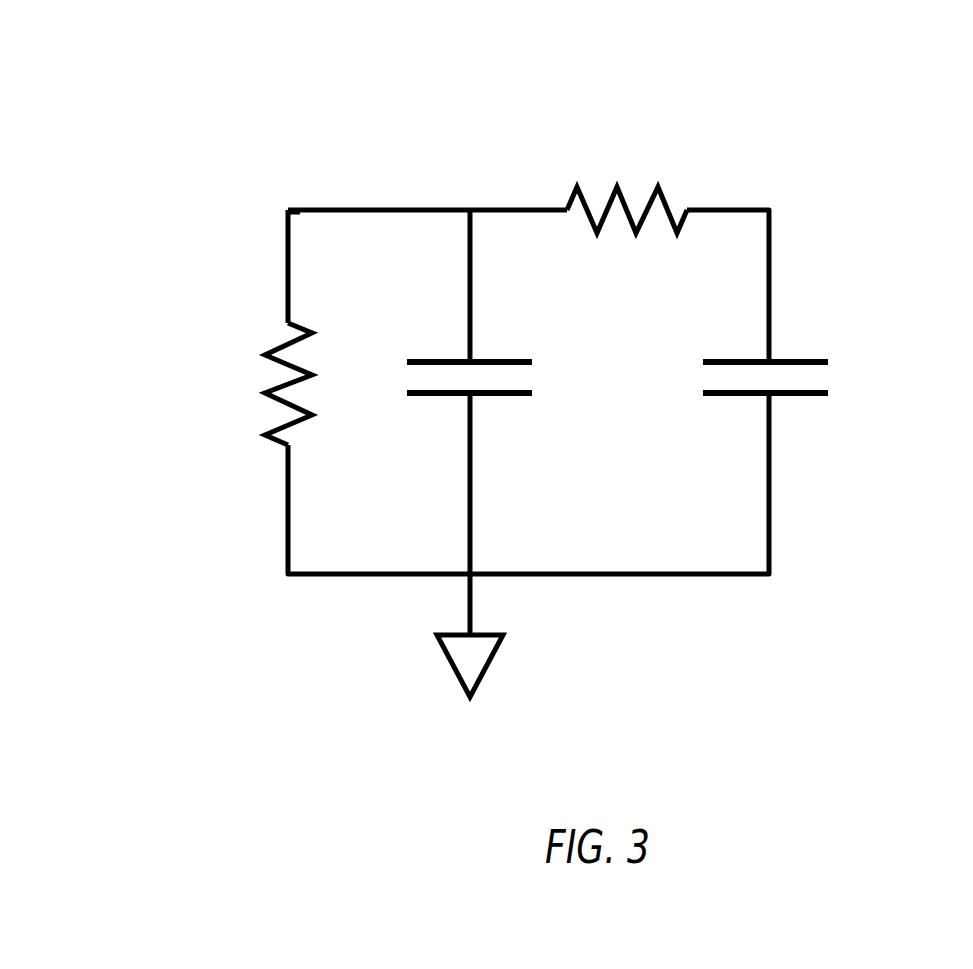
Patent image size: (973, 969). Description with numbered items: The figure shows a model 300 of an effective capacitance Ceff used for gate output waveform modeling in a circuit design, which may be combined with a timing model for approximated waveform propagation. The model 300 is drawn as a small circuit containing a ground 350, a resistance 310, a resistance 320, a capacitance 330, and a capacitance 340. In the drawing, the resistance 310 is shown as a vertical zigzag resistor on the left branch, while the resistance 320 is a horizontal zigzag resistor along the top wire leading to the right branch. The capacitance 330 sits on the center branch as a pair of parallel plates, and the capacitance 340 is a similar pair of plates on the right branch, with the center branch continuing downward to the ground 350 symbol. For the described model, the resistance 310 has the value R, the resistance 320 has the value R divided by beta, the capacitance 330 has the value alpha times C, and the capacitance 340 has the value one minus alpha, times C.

The model 300 is at (238, 88).
The resistance 310 is at (270, 372).
The resistance 320 is at (577, 185).
The capacitance 330 is at (480, 400).
The capacitance 340 is at (800, 400).
The ground 350 is at (497, 643).